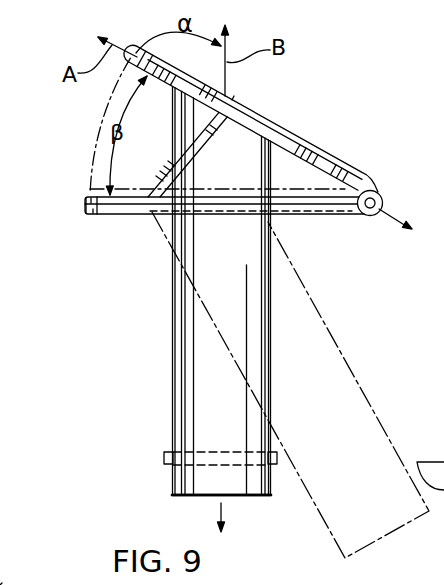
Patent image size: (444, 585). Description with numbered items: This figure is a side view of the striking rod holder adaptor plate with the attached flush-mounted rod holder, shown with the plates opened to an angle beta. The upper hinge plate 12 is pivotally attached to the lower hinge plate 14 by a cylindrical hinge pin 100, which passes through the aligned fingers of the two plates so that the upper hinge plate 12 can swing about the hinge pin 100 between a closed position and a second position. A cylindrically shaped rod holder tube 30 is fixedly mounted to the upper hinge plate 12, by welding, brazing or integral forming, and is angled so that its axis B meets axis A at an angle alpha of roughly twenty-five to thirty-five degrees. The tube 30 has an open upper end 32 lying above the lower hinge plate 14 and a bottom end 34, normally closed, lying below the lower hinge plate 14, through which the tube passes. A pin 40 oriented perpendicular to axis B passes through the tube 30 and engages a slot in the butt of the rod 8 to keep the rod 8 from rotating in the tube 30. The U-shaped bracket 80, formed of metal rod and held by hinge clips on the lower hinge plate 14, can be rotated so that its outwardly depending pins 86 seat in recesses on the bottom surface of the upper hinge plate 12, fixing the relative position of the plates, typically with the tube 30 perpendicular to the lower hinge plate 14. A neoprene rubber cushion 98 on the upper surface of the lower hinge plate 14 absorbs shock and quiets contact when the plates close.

The upper hinge plate 12 is at (136, 47).
The lower hinge plate 14 is at (88, 216).
The rod holder tube 30 is at (172, 418).
The open upper end 32 is at (265, 117).
The bottom end 34 is at (254, 497).
The pin 40 is at (165, 462).
The U-shaped bracket 80 is at (194, 156).
The outwardly depending pins 86 is at (238, 101).
The neoprene rubber cushion 98 is at (85, 205).
The hinge pin 100 is at (382, 194).
The rod 8 is at (0, 584).